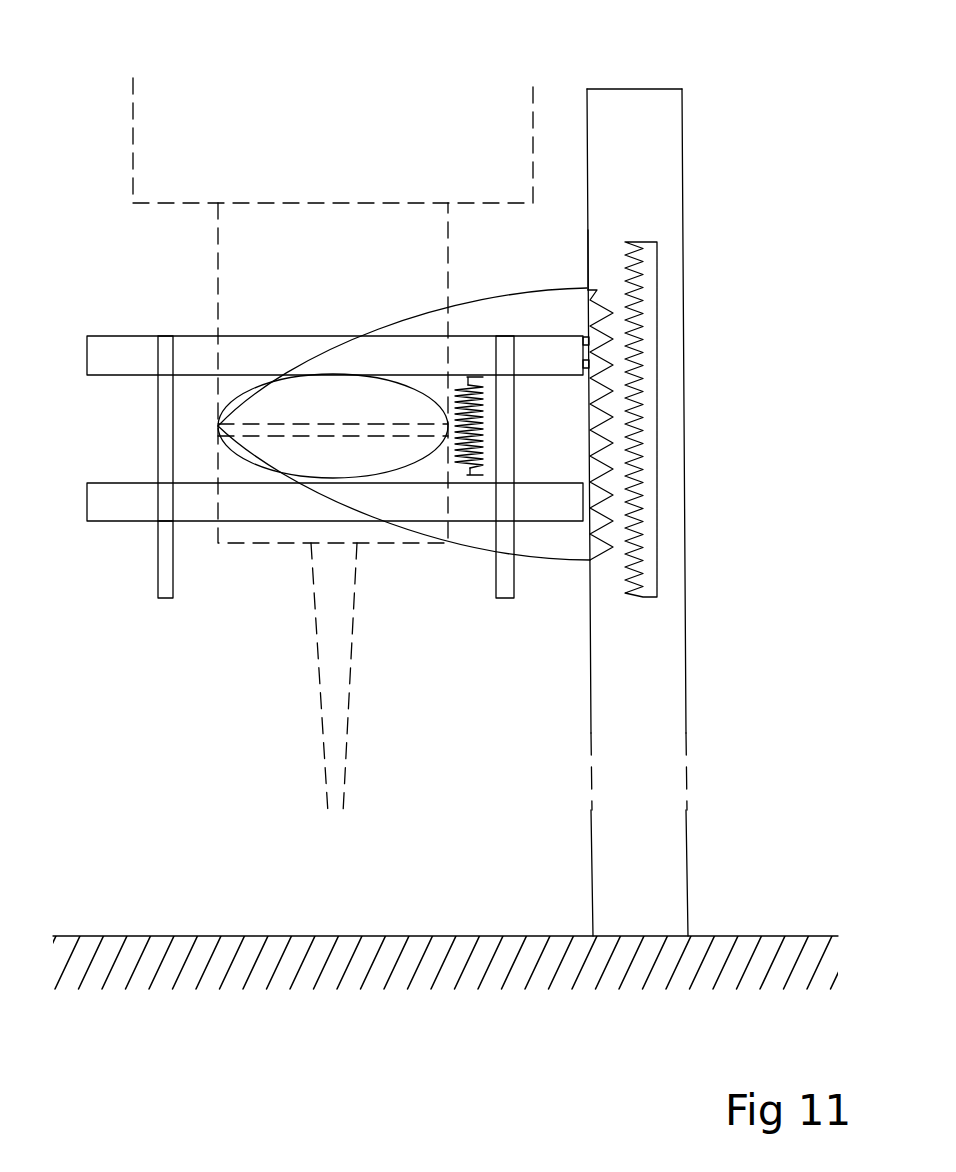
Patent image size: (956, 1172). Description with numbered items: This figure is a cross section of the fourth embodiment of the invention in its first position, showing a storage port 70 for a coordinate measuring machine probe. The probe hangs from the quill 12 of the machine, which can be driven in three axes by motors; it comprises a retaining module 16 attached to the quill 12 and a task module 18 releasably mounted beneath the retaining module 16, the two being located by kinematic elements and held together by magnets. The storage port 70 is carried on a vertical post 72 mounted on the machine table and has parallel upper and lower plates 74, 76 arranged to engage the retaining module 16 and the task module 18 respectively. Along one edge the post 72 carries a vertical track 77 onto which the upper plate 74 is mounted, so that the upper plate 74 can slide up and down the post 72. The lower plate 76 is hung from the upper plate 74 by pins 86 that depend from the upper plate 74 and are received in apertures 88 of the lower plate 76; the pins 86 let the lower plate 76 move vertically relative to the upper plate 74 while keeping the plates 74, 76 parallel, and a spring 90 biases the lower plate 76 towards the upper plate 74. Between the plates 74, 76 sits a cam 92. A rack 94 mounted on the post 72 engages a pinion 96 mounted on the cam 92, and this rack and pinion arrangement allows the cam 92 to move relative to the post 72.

The quill 12 is at (510, 108).
The retaining module 16 is at (238, 271).
The task module 18 is at (252, 528).
The storage port 70 is at (697, 457).
The vertical post 72 is at (660, 153).
The upper plate 74 is at (97, 358).
The lower plate 76 is at (101, 502).
The vertical track 77 is at (586, 258).
The pins 86 is at (157, 600).
The apertures 88 is at (149, 529).
The spring 90 is at (479, 387).
The cam 92 is at (285, 397).
The rack 94 is at (633, 297).
The pinion 96 is at (547, 540).